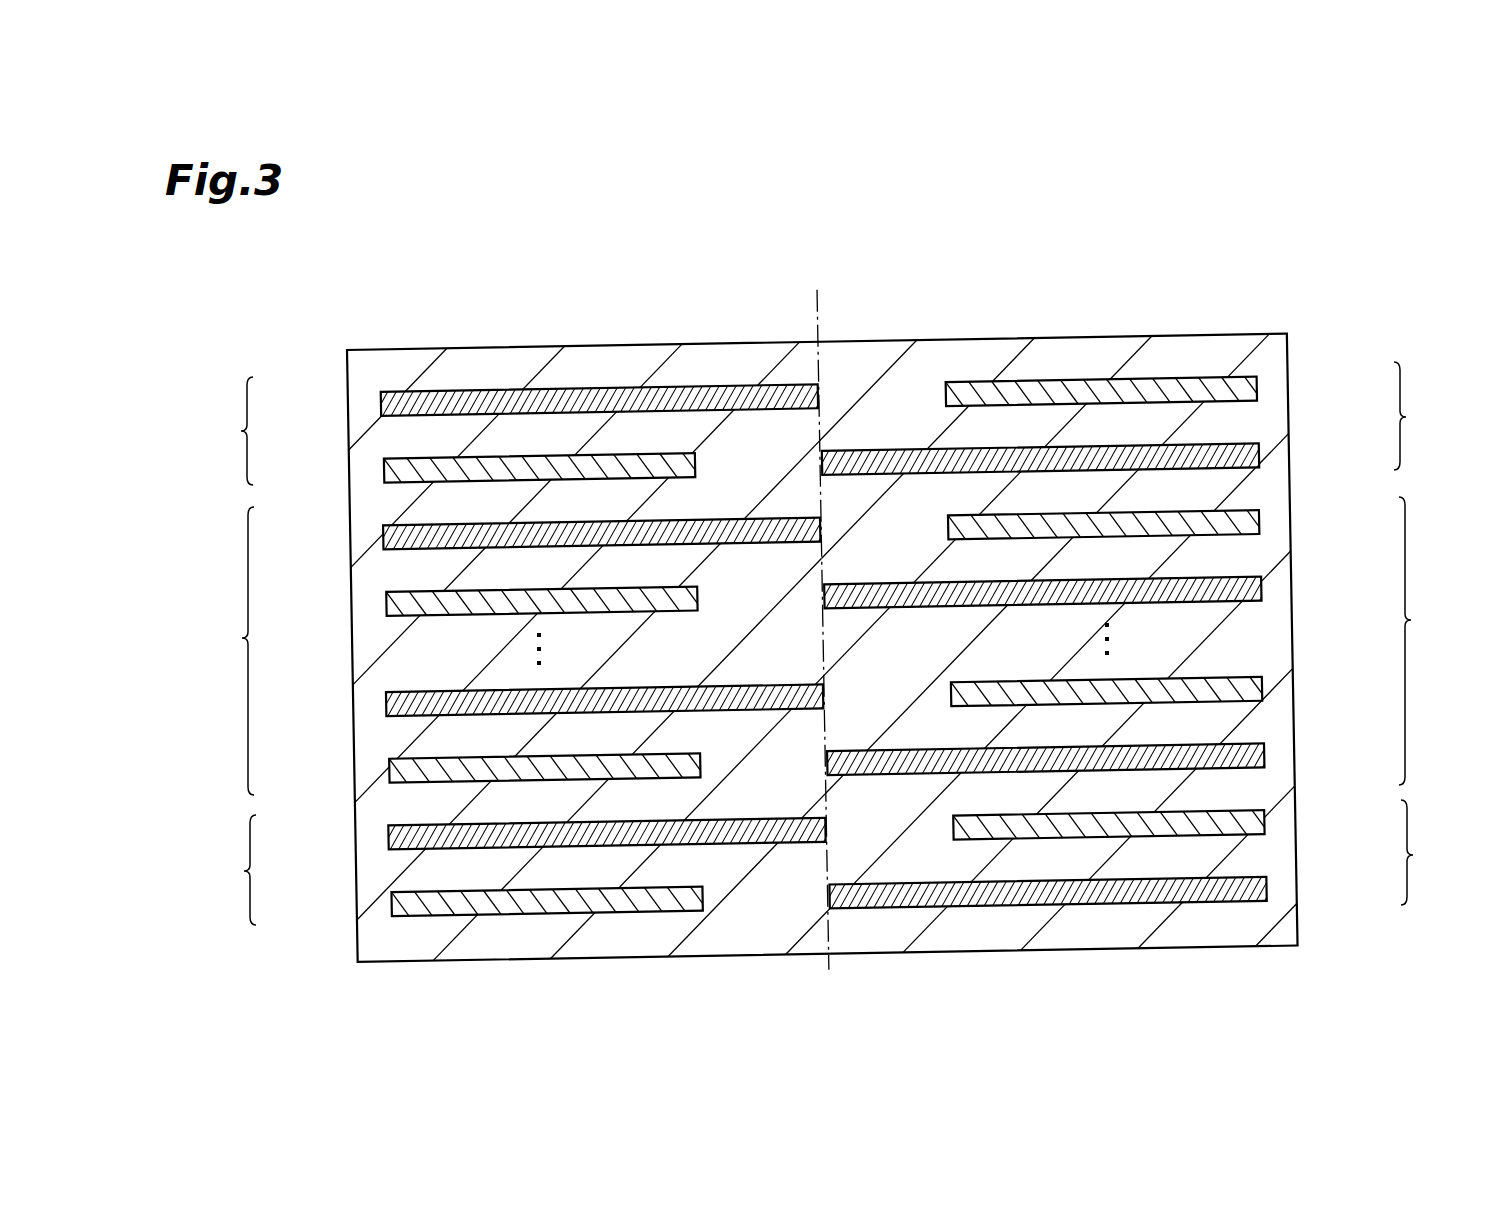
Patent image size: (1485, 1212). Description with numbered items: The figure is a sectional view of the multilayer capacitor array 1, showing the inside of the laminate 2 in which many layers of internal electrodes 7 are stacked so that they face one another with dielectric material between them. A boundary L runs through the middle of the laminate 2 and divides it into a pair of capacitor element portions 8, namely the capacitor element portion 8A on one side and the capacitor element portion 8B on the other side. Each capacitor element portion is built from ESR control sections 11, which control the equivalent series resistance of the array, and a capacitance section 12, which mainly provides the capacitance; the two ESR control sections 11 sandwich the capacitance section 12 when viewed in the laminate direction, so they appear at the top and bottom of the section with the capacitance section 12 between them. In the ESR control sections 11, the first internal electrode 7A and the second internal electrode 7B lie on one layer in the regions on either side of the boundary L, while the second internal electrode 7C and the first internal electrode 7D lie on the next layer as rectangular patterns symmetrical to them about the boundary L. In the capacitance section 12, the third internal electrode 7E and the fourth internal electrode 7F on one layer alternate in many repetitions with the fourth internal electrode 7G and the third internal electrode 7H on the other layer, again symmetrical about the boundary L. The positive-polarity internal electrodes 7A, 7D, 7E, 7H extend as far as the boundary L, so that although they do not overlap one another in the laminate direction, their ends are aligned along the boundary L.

The multilayer capacitor array 1 is at (1360, 294).
The laminate 2 is at (1256, 337).
The internal electrodes 7 is at (826, 644).
The first internal electrode 7A is at (380, 402).
The second internal electrode 7B is at (1258, 389).
The second internal electrode 7C is at (381, 469).
The first internal electrode 7D is at (1259, 456).
The third internal electrode 7E is at (382, 535).
The fourth internal electrode 7F is at (1260, 522).
The fourth internal electrode 7G is at (384, 602).
The third internal electrode 7H is at (1262, 589).
The capacitor element portions 8 is at (742, 616).
The capacitor element portion 8A is at (566, 340).
The capacitor element portion 8B is at (1062, 330).
The ESR control sections 11 is at (831, 643).
The capacitance section 12 is at (830, 646).
The boundary L is at (815, 302).